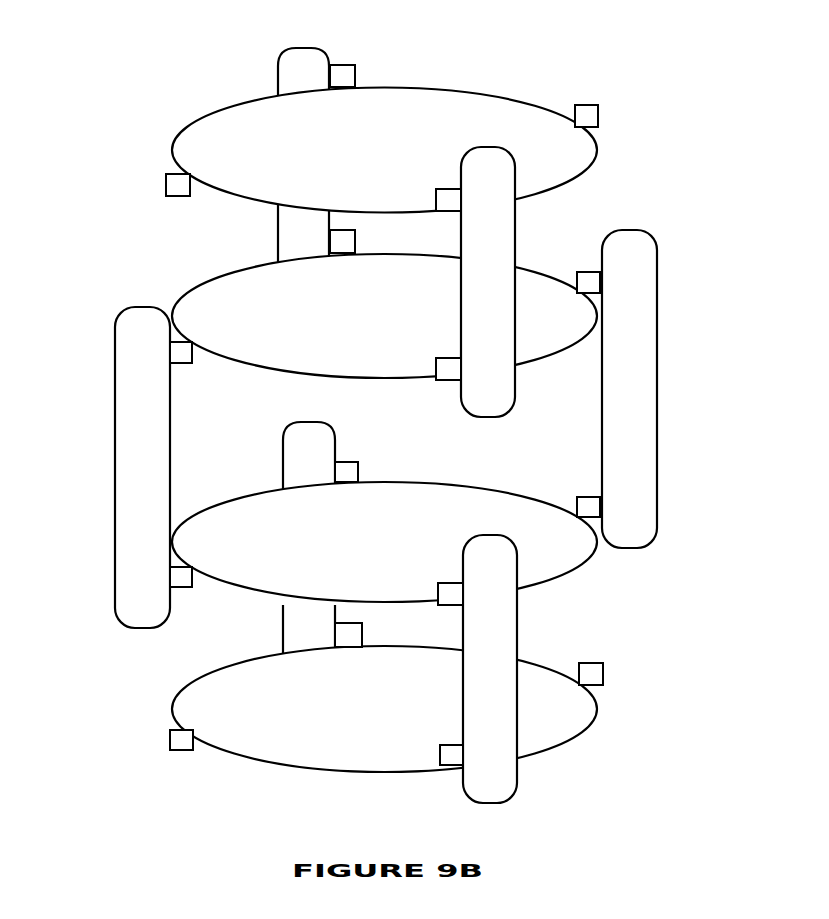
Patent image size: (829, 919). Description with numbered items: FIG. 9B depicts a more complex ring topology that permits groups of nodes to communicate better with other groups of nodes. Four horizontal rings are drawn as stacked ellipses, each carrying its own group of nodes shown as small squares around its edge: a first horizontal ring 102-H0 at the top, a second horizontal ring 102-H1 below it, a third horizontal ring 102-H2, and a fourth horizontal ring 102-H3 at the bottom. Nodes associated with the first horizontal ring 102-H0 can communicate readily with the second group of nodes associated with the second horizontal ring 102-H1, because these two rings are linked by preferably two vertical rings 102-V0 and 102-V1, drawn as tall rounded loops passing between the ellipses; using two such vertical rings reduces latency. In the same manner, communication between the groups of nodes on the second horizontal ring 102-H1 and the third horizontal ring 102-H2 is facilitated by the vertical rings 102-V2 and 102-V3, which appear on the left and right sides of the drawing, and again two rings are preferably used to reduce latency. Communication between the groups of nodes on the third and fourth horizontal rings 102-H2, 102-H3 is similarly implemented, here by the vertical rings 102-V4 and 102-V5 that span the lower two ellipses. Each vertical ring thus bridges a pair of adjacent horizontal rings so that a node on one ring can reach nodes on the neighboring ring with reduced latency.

The first horizontal ring 102-H0 is at (240, 125).
The second horizontal ring 102-H1 is at (240, 285).
The third horizontal ring 102-H2 is at (465, 487).
The fourth horizontal ring 102-H3 is at (282, 762).
The vertical ring 102-V0 is at (293, 47).
The vertical ring 102-V1 is at (503, 238).
The vertical ring 102-V2 is at (135, 463).
The vertical ring 102-V3 is at (638, 398).
The vertical ring 102-V4 is at (297, 451).
The vertical ring 102-V5 is at (503, 634).